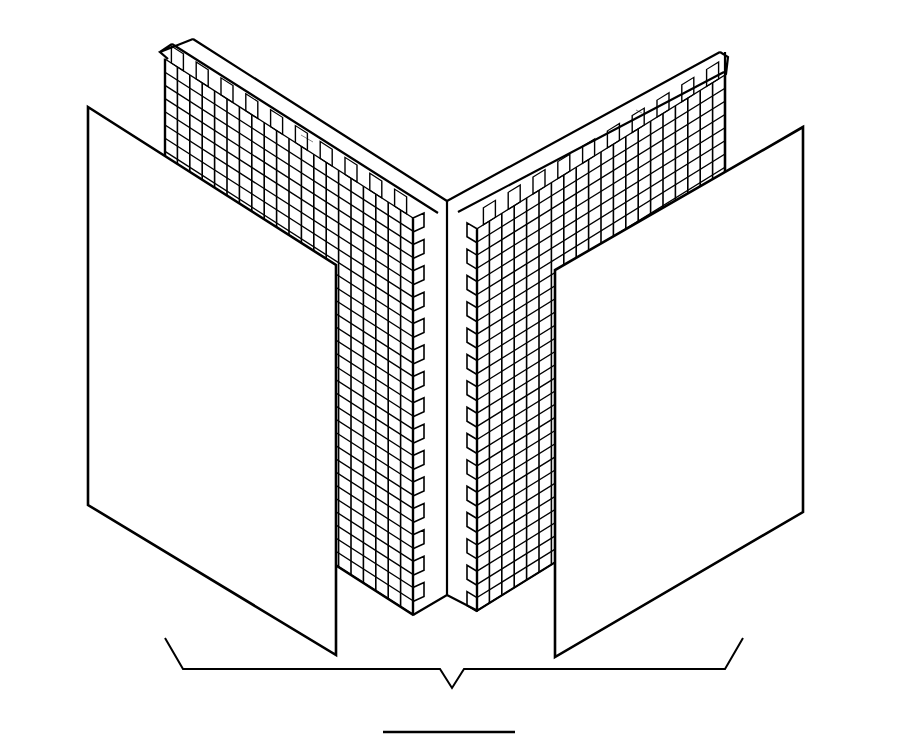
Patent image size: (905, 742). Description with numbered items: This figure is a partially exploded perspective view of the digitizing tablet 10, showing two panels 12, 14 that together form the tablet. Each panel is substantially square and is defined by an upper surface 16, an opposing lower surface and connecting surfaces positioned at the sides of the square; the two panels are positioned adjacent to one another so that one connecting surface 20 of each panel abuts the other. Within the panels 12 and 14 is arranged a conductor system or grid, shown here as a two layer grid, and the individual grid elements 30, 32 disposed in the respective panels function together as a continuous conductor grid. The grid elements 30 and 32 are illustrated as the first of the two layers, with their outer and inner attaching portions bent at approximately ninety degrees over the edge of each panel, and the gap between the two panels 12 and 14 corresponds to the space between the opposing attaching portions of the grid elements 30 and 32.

The digitizing tablet 10 is at (118, 77).
The panel 12 is at (383, 152).
The panel 14 is at (526, 148).
The upper surface 16 is at (212, 375).
The connecting surface 20 is at (432, 570).
The grid element 30 is at (309, 142).
The grid element 32 is at (636, 109).